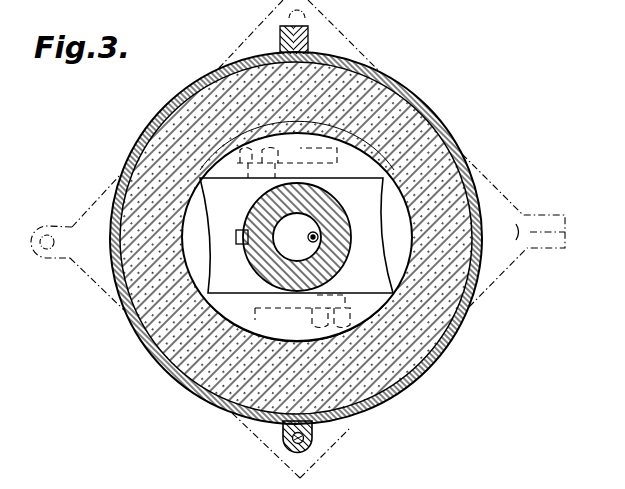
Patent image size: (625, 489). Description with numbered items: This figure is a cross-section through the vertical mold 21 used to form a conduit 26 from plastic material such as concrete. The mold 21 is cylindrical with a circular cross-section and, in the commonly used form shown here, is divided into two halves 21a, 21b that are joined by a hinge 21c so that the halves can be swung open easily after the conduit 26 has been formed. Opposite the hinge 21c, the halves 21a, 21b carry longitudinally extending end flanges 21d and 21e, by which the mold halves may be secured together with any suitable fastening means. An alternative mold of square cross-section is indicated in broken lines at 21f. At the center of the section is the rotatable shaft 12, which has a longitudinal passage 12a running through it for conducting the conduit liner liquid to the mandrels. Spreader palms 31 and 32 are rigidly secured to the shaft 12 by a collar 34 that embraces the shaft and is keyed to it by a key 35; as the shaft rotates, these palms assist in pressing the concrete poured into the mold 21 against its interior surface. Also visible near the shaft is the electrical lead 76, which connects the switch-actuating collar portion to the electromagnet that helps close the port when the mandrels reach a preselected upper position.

The shaft 12 is at (335, 270).
The longitudinal passage 12a is at (263, 202).
The vertical mold 21 is at (124, 165).
The mold half 21a is at (114, 256).
The mold half 21b is at (482, 228).
The hinge 21c is at (313, 429).
The end flange 21d is at (280, 45).
The end flange 21e is at (308, 45).
The square cross-section mold 21f is at (502, 272).
The conduit 26 is at (465, 178).
The spreader palm 31 is at (243, 305).
The spreader palm 32 is at (212, 153).
The collar 34 is at (240, 272).
The key 35 is at (236, 236).
The electrical lead 76 is at (308, 238).